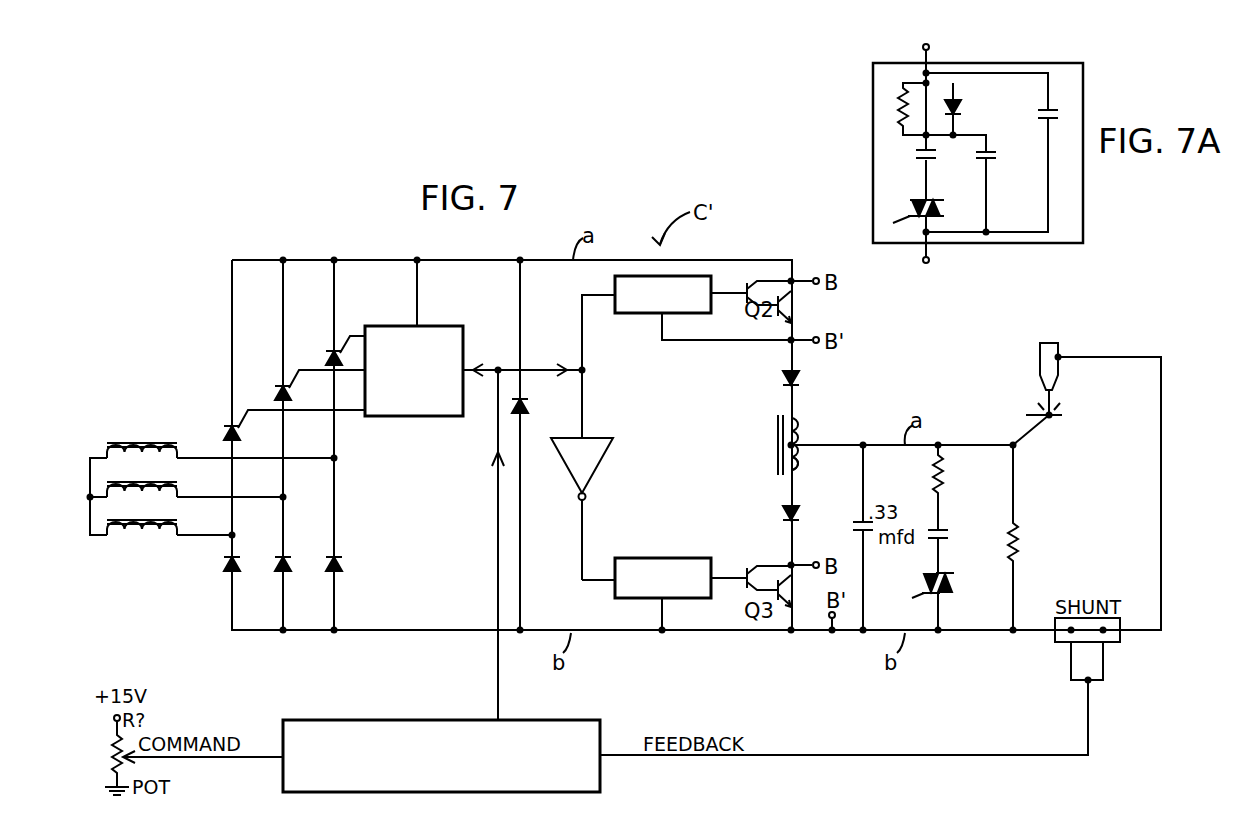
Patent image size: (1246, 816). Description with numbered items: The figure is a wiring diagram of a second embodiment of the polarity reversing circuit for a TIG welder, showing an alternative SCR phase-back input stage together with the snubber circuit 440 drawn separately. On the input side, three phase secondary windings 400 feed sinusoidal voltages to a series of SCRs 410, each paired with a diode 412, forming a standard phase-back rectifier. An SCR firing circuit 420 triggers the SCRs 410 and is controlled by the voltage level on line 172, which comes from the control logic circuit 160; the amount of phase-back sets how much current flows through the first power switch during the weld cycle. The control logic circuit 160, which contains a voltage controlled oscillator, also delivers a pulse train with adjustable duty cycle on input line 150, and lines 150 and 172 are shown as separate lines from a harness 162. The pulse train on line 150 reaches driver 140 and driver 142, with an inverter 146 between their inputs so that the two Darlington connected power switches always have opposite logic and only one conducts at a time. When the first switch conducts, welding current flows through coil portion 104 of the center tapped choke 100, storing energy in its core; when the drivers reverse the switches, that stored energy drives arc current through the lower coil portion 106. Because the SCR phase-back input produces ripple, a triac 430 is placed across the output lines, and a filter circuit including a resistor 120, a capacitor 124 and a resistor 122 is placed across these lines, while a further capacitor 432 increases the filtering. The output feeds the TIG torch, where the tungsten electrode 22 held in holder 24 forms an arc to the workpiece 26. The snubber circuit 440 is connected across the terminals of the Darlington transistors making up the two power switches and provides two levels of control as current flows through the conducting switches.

In FIG. 7, the three-phase secondary windings 400 is at (148, 438).
In FIG. 7, the SCRs 410 is at (331, 349).
In FIG. 7, the diode 412 is at (240, 566).
In FIG. 7, the SCR firing circuit 420 is at (408, 416).
In FIG. 7, the line 172 is at (484, 368).
In FIG. 7, the input line 150 is at (544, 368).
In FIG. 7, the harness 162 is at (498, 485).
In FIG. 7, the inverter 146 is at (600, 443).
In FIG. 7, the driver 140 is at (640, 315).
In FIG. 7, the driver 142 is at (638, 560).
In FIG. 7, the coil portion 104 is at (806, 420).
In FIG. 7, the choke 100 is at (816, 431).
In FIG. 7, the coil portion 106 is at (798, 462).
In FIG. 7, the capacitor 432 is at (800, 513).
In FIG. 7, the resistor 120 is at (933, 479).
In FIG. 7, the capacitor 124 is at (927, 540).
In FIG. 7, the triac 430 is at (912, 596).
In FIG. 7, the resistor 122 is at (1020, 550).
In FIG. 7, the holder 24 is at (1040, 368).
In FIG. 7, the tungsten electrode 22 is at (1055, 394).
In FIG. 7, the workpiece 26 is at (1063, 418).
In FIG. 7, the control logic circuit 160 is at (406, 720).
In FIG. 7A, the snubber circuit 440 is at (1083, 185).